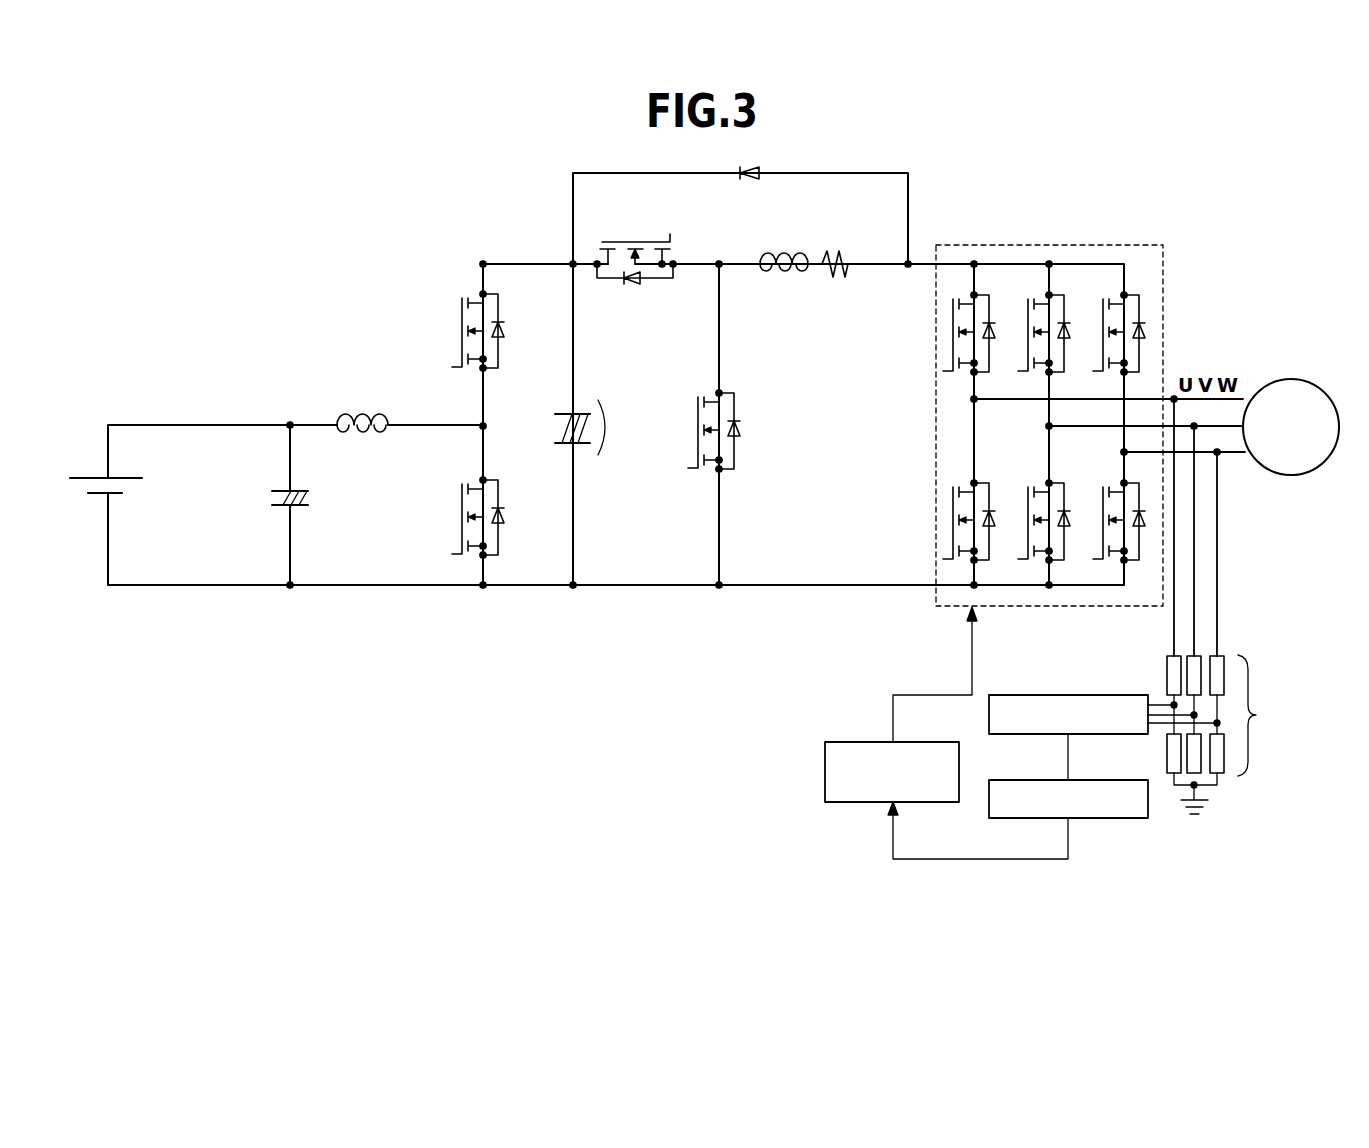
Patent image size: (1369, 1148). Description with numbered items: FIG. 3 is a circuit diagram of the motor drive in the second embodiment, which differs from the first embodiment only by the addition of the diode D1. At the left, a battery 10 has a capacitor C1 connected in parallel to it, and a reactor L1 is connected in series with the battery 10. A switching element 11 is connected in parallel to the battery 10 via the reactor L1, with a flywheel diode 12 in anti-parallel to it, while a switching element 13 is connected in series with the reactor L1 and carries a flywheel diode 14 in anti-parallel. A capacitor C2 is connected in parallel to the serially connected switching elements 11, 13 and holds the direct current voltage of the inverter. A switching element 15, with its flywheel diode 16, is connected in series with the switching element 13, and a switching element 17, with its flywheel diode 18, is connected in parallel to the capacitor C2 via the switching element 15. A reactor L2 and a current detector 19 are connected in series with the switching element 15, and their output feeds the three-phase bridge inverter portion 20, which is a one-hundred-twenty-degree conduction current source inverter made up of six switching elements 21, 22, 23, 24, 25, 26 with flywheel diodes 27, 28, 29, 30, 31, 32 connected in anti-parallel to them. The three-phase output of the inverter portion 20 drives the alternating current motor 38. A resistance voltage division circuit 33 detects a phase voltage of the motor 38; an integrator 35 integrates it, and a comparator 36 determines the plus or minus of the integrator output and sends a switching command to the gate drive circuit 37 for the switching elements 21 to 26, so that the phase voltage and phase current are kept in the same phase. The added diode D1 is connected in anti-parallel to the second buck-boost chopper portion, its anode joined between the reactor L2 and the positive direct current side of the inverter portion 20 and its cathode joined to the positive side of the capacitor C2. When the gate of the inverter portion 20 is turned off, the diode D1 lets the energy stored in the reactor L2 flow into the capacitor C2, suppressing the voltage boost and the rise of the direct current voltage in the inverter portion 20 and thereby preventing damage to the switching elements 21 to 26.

The battery 10 is at (82, 478).
The switching element 11 is at (460, 521).
The flywheel diode 12 is at (500, 518).
The switching element 13 is at (460, 333).
The flywheel diode 14 is at (500, 331).
The switching element 15 is at (629, 241).
The flywheel diode 16 is at (636, 282).
The switching element 17 is at (697, 430).
The flywheel diode 18 is at (738, 430).
The current detector 19 is at (835, 279).
The three-phase bridge inverter portion 20 is at (1048, 245).
The switching element 21 is at (952, 333).
The switching element 22 is at (952, 522).
The switching element 23 is at (1026, 347).
The switching element 24 is at (1027, 540).
The switching element 25 is at (1101, 347).
The switching element 26 is at (1102, 540).
The flywheel diode 27 is at (991, 325).
The flywheel diode 28 is at (992, 519).
The flywheel diode 29 is at (1066, 325).
The flywheel diode 30 is at (1067, 519).
The flywheel diode 31 is at (1143, 333).
The flywheel diode 32 is at (1140, 535).
The resistance voltage division circuit 33 is at (1230, 734).
The integrator 35 is at (1066, 694).
The comparator 36 is at (1098, 819).
The gate drive circuit 37 is at (920, 804).
The alternating current motor 38 is at (1290, 379).
The capacitor C1 is at (270, 497).
The capacitor C2 is at (568, 414).
The reactor L1 is at (358, 415).
The reactor L2 is at (783, 279).
The diode D1 is at (750, 189).